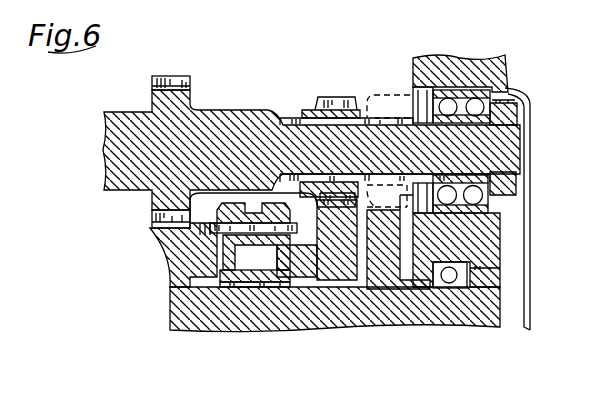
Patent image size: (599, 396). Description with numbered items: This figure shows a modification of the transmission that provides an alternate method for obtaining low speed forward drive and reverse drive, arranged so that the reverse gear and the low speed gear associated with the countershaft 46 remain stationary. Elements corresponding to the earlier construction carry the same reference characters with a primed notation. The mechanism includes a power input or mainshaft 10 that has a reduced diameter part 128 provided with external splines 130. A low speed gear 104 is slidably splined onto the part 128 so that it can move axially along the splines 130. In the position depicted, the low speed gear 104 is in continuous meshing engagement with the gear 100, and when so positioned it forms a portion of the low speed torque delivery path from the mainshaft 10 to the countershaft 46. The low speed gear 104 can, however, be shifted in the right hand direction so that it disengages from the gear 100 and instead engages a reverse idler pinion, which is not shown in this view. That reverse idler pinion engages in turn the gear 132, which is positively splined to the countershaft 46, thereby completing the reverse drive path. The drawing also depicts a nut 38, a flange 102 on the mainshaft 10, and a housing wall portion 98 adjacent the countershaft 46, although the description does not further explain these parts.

The mainshaft 10 is at (227, 123).
The flange 102 is at (158, 95).
The low speed gear 104 is at (332, 108).
The reduced diameter part 128 is at (370, 132).
The external splines 130 is at (414, 122).
The nut 38 is at (518, 182).
The gear 132 is at (395, 276).
The countershaft 46 is at (268, 310).
The housing wall 98 is at (152, 236).
The gear 100 is at (340, 255).